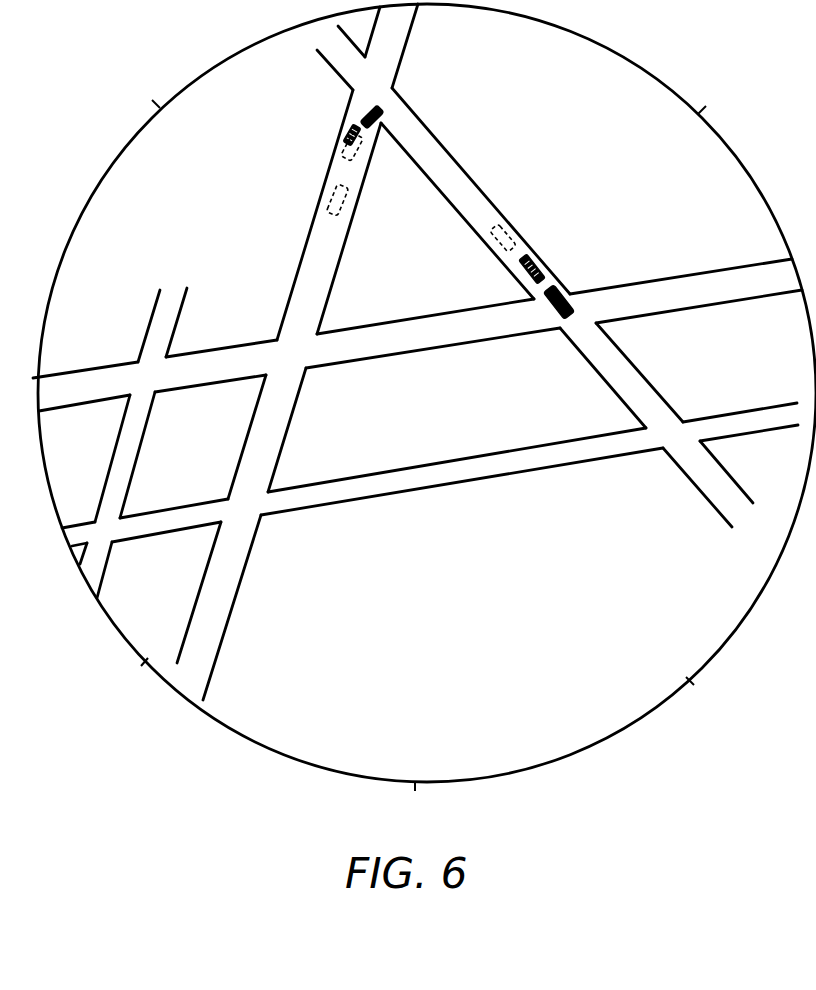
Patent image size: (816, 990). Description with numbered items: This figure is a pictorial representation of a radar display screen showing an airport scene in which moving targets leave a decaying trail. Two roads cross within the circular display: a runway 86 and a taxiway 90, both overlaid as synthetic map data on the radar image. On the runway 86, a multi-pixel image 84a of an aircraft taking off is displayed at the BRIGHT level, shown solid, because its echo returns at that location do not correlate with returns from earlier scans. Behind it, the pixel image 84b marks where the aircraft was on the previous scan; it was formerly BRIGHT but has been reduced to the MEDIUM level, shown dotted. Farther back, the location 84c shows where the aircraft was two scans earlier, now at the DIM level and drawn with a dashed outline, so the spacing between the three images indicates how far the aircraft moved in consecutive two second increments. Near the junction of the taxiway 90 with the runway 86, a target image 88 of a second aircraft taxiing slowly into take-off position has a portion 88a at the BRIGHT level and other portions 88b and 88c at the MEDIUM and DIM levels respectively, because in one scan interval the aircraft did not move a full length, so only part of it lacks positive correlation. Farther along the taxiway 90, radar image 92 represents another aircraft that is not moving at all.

The multi-pixel image of aircraft taking off 84a is at (562, 292).
The pixel image of aircraft on previous scan 84b is at (533, 266).
The spatial location of aircraft two scans earlier 84c is at (513, 218).
The runway 86 is at (447, 167).
The target image 88 is at (345, 142).
The BRIGHT level portion of target image 88a is at (376, 112).
The MEDIUM level portion of target image 88b is at (356, 127).
The DIM level portion of target image 88c is at (340, 148).
The taxiway 90 is at (322, 243).
The radar image of stationary aircraft 92 is at (327, 193).